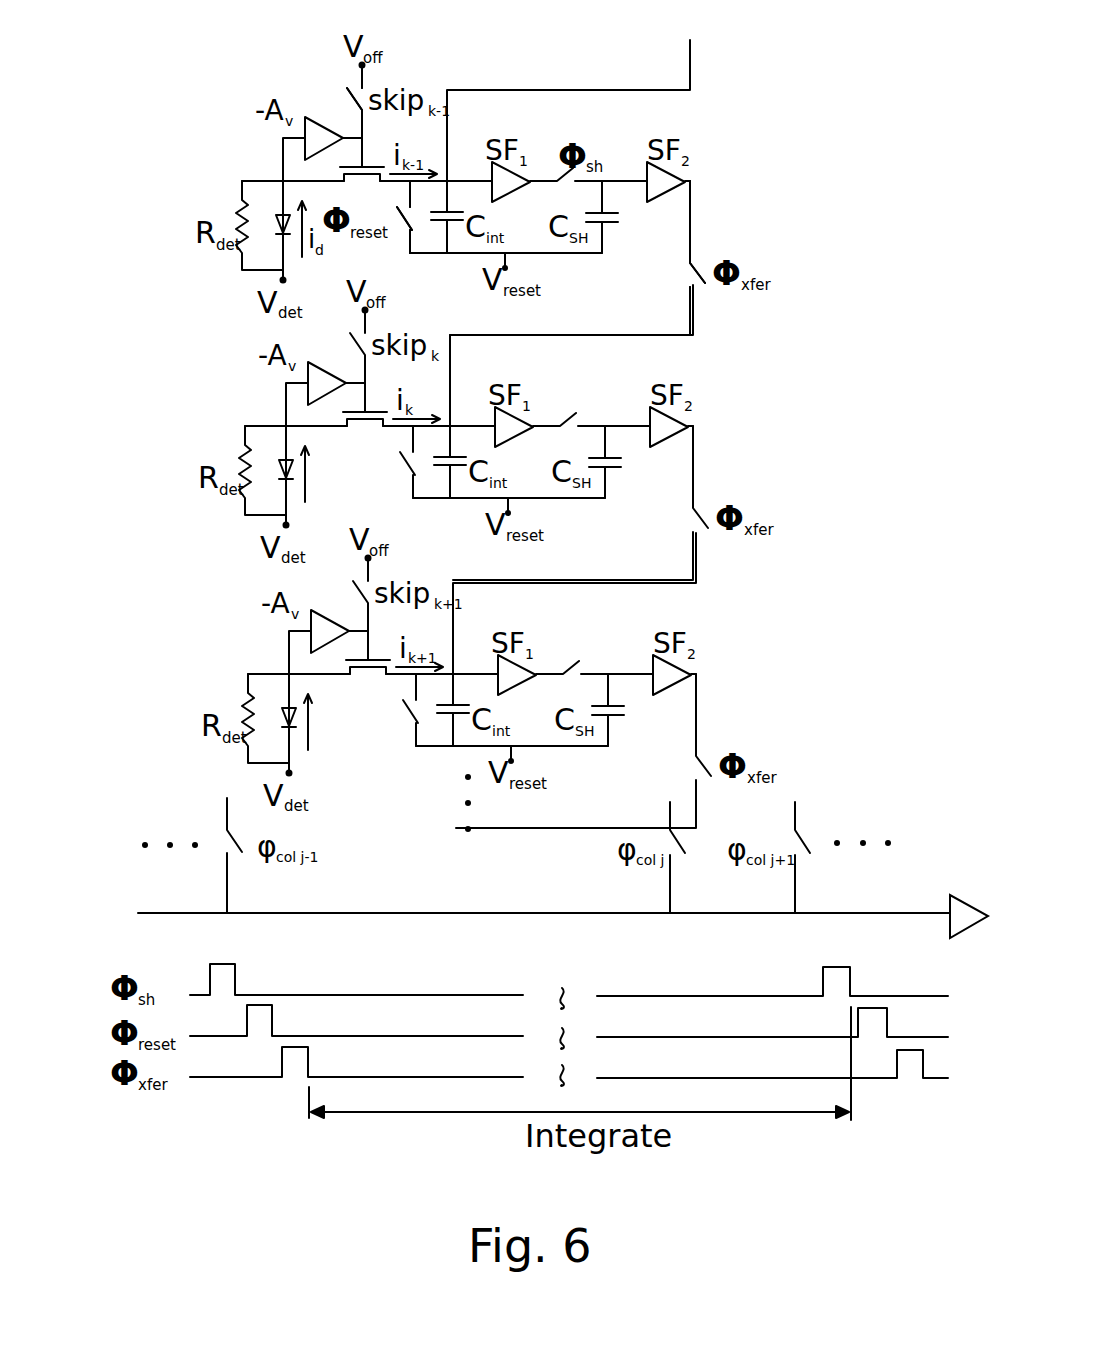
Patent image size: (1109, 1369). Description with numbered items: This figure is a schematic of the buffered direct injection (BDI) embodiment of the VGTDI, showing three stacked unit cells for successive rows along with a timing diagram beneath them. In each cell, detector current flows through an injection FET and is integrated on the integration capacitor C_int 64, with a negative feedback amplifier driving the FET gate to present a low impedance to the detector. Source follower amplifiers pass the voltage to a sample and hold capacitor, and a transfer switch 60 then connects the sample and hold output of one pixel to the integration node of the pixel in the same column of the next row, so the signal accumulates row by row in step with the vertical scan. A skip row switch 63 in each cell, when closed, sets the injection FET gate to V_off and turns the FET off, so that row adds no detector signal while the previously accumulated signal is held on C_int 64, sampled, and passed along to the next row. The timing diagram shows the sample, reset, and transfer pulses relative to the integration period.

The transfer switch 60 is at (703, 292).
The skip row switch 63 is at (328, 78).
The integration capacitor C_int 64 is at (438, 226).